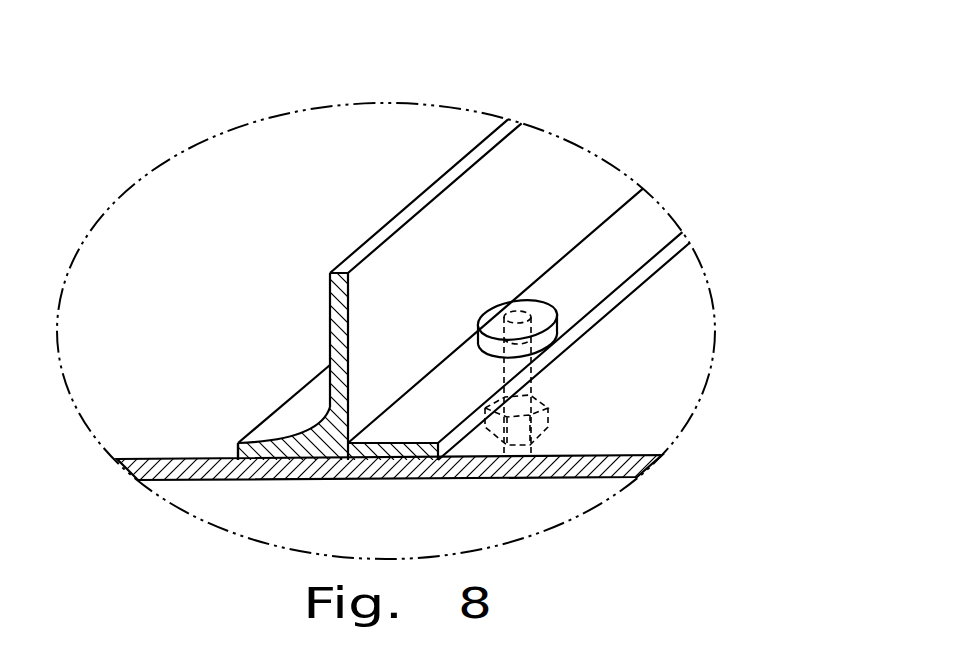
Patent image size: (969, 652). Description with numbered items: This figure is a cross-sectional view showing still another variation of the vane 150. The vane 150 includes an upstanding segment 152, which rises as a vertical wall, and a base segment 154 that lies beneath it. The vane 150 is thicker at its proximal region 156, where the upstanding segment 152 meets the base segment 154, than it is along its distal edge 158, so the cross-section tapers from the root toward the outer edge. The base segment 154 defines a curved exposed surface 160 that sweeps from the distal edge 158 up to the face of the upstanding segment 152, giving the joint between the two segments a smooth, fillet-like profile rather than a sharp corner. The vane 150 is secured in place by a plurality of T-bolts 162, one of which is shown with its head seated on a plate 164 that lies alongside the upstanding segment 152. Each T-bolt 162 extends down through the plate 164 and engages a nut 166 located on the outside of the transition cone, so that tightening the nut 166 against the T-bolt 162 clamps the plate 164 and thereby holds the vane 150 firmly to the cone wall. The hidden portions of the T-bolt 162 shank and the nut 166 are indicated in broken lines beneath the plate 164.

The vane 150 is at (580, 114).
The upstanding segment 152 is at (535, 194).
The base segment 154 is at (277, 452).
The proximal region 156 is at (318, 442).
The distal edge 158 is at (238, 443).
The curved exposed surface 160 is at (302, 412).
The T-bolt 162 is at (552, 335).
The plate 164 is at (655, 263).
The nut 166 is at (557, 424).